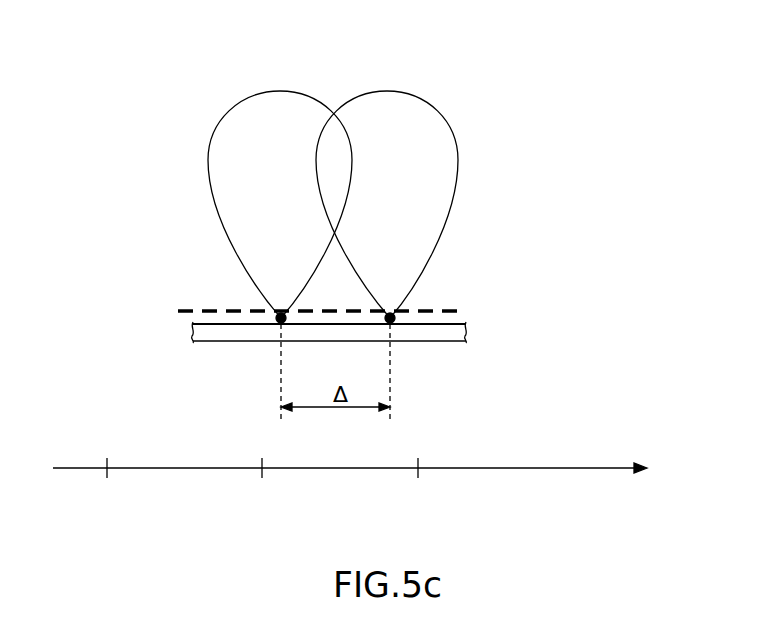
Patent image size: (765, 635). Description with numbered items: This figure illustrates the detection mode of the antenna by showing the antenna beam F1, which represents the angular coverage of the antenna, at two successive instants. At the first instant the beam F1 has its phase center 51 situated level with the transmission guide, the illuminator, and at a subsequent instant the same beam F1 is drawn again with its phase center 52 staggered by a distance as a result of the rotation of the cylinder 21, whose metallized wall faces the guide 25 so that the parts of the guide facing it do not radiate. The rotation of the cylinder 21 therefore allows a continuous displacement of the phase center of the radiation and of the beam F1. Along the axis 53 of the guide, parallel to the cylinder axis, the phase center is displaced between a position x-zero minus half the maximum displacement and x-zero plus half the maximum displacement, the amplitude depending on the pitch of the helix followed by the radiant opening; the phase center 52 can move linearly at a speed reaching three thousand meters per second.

The antenna beam F1 is at (225, 148).
The cylinder 21 is at (212, 310).
The guide 25 is at (431, 340).
The phase center 51 is at (281, 313).
The phase center 52 is at (390, 313).
The axis of the guide 53 is at (569, 470).